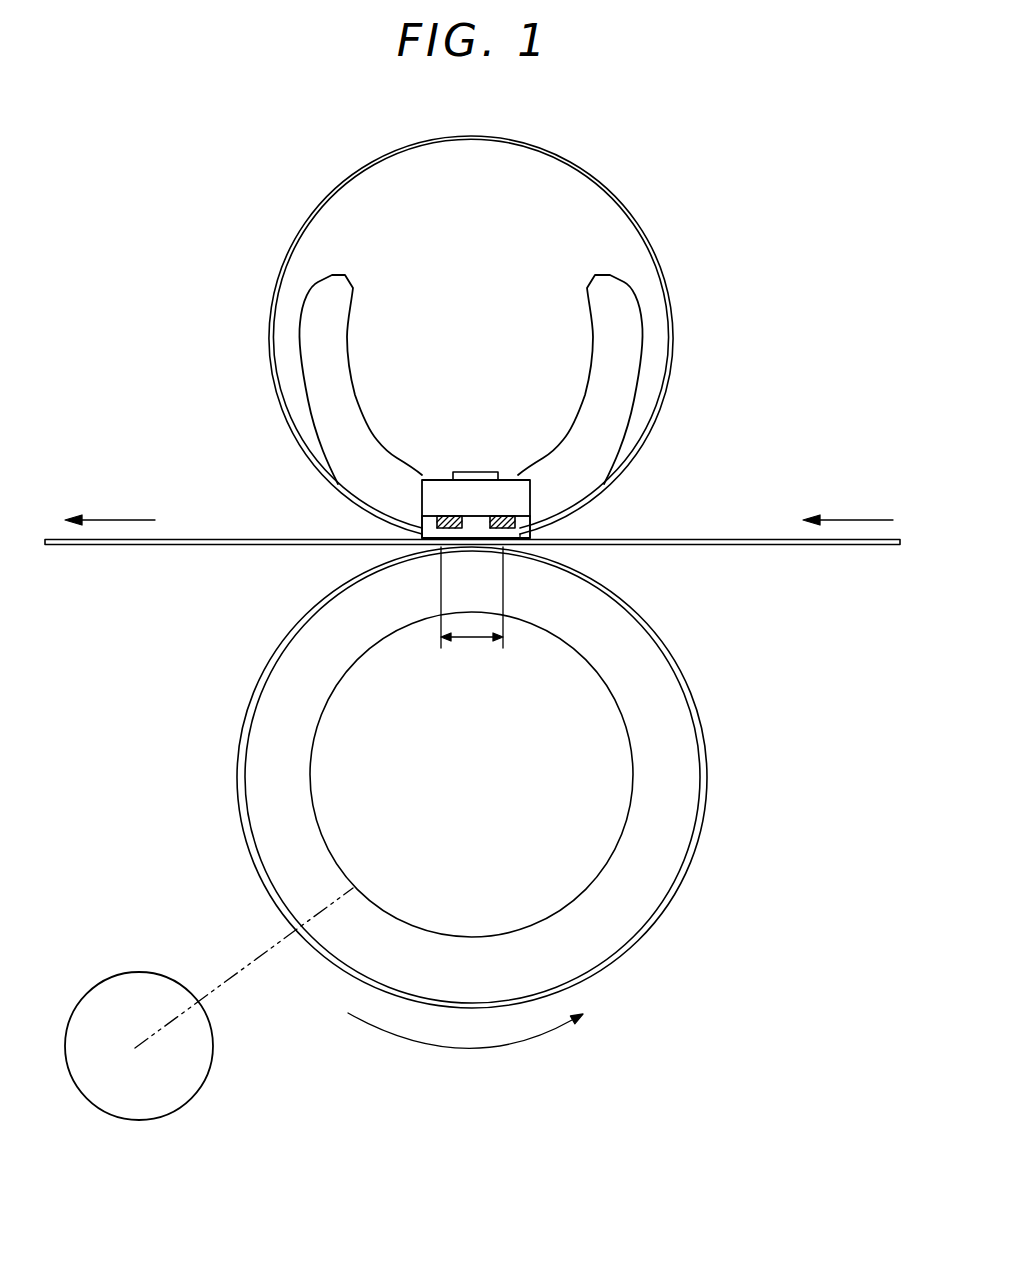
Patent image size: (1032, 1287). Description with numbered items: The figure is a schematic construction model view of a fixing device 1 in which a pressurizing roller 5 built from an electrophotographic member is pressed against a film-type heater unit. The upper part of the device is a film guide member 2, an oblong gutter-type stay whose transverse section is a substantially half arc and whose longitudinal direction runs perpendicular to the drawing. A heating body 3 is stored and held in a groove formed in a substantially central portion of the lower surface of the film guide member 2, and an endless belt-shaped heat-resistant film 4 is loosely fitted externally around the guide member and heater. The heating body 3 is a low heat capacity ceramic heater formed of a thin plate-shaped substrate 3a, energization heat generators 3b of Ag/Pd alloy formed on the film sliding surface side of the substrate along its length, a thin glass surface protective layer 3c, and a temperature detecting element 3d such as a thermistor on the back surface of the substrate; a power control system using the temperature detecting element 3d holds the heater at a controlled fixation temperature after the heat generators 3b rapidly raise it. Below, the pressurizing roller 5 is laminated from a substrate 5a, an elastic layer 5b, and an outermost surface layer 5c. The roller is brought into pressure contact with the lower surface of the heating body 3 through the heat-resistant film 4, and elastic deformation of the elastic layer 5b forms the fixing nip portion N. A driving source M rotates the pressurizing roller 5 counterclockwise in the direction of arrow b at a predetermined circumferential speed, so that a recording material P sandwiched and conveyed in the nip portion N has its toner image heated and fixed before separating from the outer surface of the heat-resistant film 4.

The fixing device 1 is at (606, 139).
The film guide member 2 is at (623, 338).
The heating body 3 is at (383, 387).
The substrate 3a is at (508, 490).
The energization heat generators 3b is at (498, 515).
The surface protective layer 3c is at (435, 523).
The temperature detecting element 3d is at (475, 473).
The heat-resistant film 4 is at (618, 196).
The pressurizing roller 5 is at (783, 818).
The substrate 5a is at (595, 812).
The elastic layer 5b is at (655, 867).
The surface layer 5c is at (640, 935).
The recording material P is at (685, 538).
The pressure-contact nip portion N is at (472, 610).
The driving source M is at (140, 982).
The arrow indicating rotation direction b is at (465, 1048).